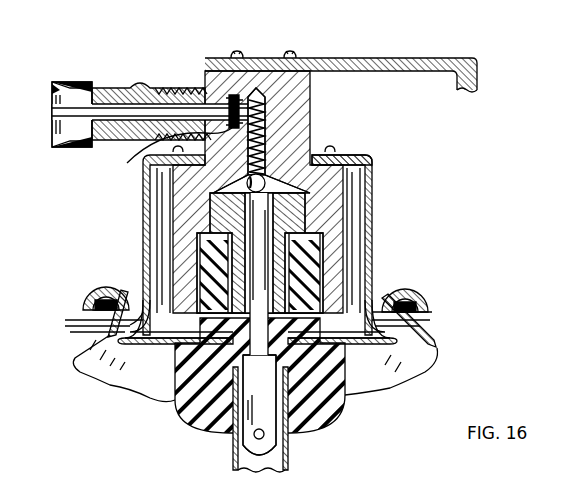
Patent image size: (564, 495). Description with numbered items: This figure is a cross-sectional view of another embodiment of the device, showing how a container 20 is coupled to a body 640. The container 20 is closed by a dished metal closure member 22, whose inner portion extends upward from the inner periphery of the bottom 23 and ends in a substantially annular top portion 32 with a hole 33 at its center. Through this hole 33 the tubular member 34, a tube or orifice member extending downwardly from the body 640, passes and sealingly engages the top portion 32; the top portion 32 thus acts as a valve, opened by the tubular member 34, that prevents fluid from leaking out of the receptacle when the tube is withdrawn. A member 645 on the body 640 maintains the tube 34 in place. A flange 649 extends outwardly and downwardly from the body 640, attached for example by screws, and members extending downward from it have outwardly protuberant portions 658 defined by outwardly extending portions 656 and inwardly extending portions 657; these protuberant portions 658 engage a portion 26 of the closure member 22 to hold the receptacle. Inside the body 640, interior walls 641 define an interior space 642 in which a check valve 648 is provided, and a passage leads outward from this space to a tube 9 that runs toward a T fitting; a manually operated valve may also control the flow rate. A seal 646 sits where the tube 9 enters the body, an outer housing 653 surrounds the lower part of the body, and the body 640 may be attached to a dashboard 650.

The tube 9 is at (75, 85).
The seal 646 is at (236, 100).
The dashboard 650 is at (410, 58).
The body 640 is at (312, 82).
The interior space 642 is at (266, 128).
The check valve 648 is at (262, 181).
The flange 649 is at (362, 158).
The member 645 is at (297, 213).
The cup housing 653 is at (373, 216).
The outwardly extending portions 656 is at (392, 282).
The outwardly protuberant portions 658 is at (410, 322).
The inwardly extending portions 657 is at (423, 347).
The annular top portion 32 is at (200, 240).
The hole 33 is at (233, 268).
The dished metal closure member 22 is at (88, 262).
The portion of closure member 26 is at (110, 322).
The container 20 is at (78, 343).
The bottom 23 is at (132, 334).
The tubular member 34 is at (268, 436).
The interior walls 641 is at (163, 157).